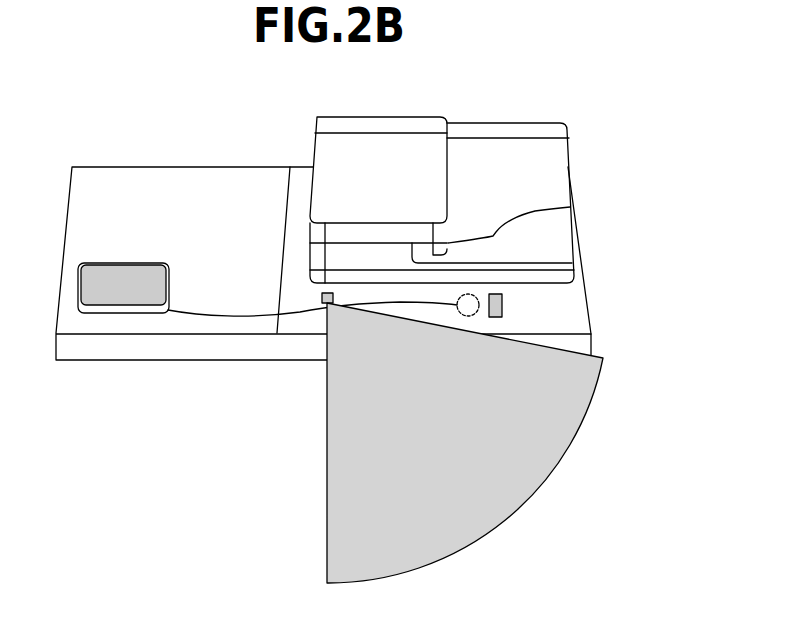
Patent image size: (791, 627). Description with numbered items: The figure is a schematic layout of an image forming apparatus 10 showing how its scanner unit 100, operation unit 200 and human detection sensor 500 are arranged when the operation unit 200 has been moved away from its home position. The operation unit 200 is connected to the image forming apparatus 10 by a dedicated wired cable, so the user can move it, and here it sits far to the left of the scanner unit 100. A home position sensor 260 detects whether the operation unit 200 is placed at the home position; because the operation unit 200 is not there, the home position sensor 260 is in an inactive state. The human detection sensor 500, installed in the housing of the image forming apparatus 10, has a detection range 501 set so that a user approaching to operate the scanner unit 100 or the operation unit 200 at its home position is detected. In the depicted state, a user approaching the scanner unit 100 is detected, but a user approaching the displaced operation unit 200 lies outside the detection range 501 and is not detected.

The image forming apparatus 10 is at (147, 166).
The scanner unit 100 is at (508, 122).
The operation unit 200 is at (120, 314).
The home position sensor 260 is at (504, 303).
The human detection sensor 500 is at (322, 298).
The detection range 501 is at (517, 487).